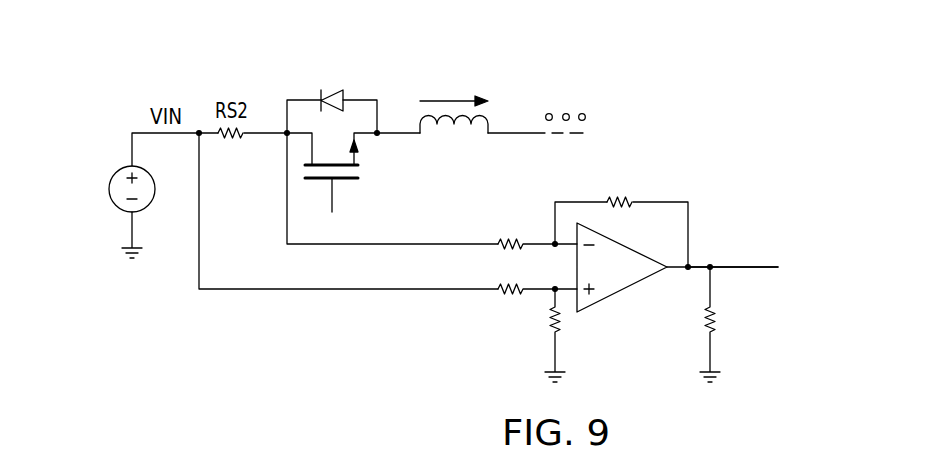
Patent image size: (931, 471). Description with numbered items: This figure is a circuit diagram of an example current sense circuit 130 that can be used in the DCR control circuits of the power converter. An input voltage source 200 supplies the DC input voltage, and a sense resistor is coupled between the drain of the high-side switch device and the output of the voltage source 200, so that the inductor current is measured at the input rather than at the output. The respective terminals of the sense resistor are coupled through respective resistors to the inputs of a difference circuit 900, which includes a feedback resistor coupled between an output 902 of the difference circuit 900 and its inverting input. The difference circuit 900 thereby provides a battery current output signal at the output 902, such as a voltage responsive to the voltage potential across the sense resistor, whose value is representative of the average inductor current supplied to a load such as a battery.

The current sense circuit 130 is at (634, 64).
The input voltage source 200 is at (109, 189).
The difference circuit 900 is at (745, 312).
The output 902 is at (742, 265).